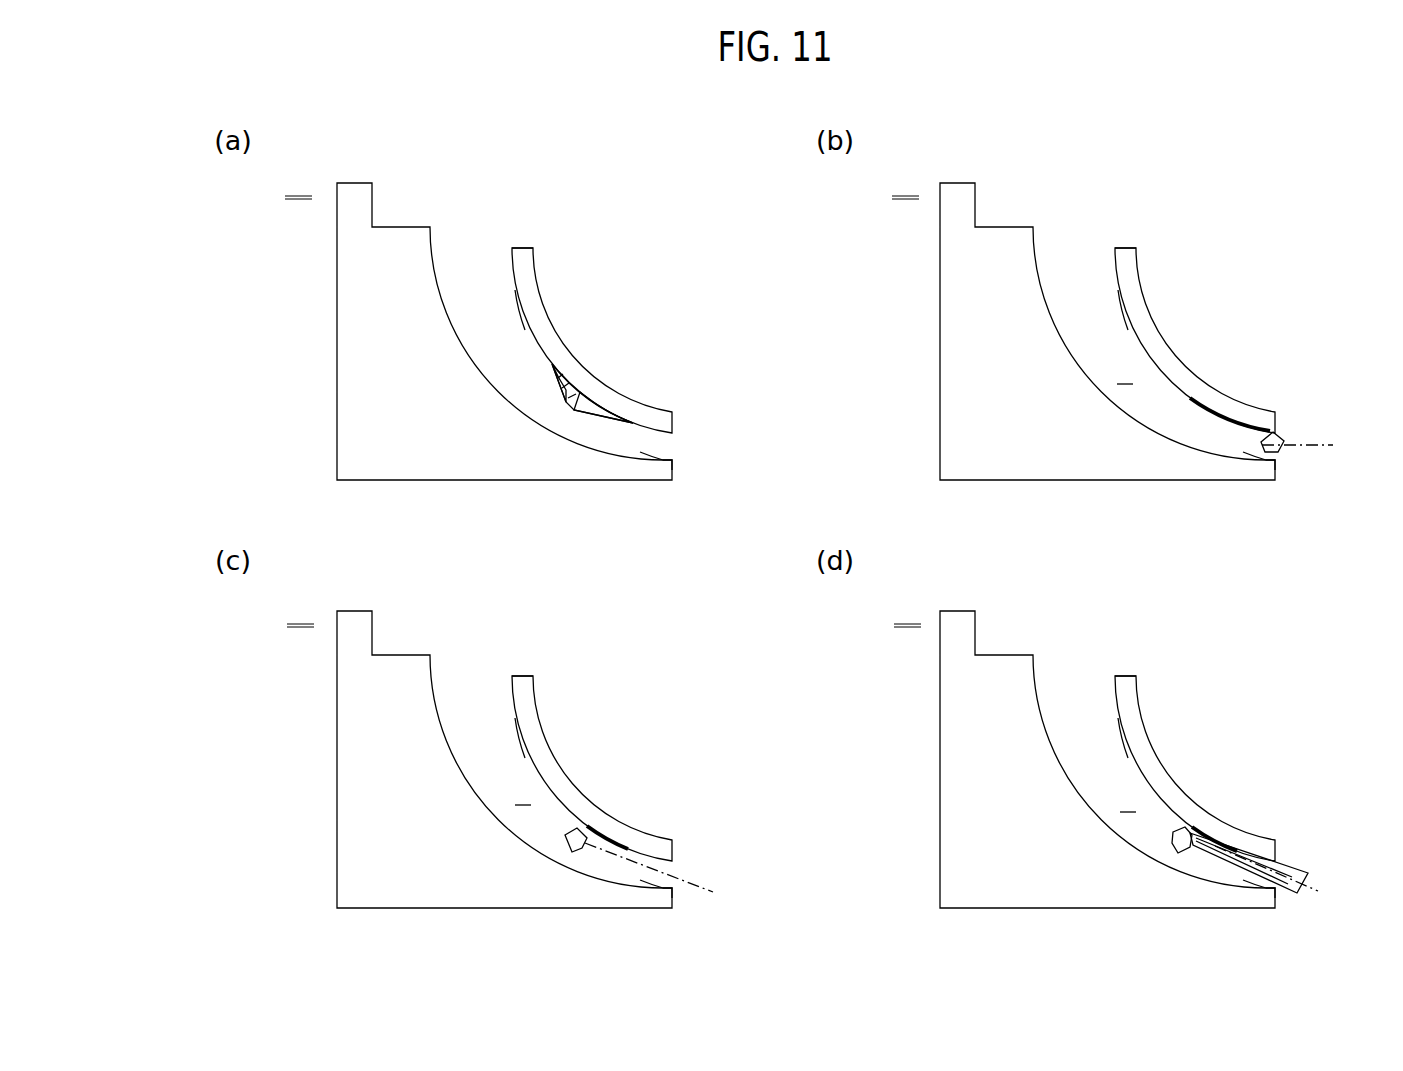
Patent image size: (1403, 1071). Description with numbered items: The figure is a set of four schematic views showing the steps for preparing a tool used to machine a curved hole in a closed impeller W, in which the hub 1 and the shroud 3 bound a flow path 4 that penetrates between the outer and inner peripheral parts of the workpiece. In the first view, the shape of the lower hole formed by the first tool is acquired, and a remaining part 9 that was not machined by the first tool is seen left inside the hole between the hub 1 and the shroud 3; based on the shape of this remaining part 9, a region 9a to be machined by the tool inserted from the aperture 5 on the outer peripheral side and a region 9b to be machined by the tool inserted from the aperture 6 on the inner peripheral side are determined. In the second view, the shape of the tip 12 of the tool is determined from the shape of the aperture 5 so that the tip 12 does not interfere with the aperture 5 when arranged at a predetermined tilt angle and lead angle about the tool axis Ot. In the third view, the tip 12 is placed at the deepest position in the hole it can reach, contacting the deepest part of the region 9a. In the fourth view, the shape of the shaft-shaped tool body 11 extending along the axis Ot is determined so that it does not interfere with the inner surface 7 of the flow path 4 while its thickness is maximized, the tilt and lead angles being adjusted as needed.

The hub 1 is at (337, 375).
The closed impeller W is at (603, 396).
The shroud 3 is at (540, 300).
The flow path 4 is at (826, 583).
The aperture 5 is at (663, 458).
The aperture 6 is at (511, 247).
The inner surface 7 is at (521, 317).
The remaining part 9 is at (580, 400).
The region 9a is at (605, 397).
The region 9b is at (558, 360).
The shaft-shaped tool body 11 is at (1283, 866).
The tip 12 is at (1276, 436).
The tool axis Ot is at (1312, 443).